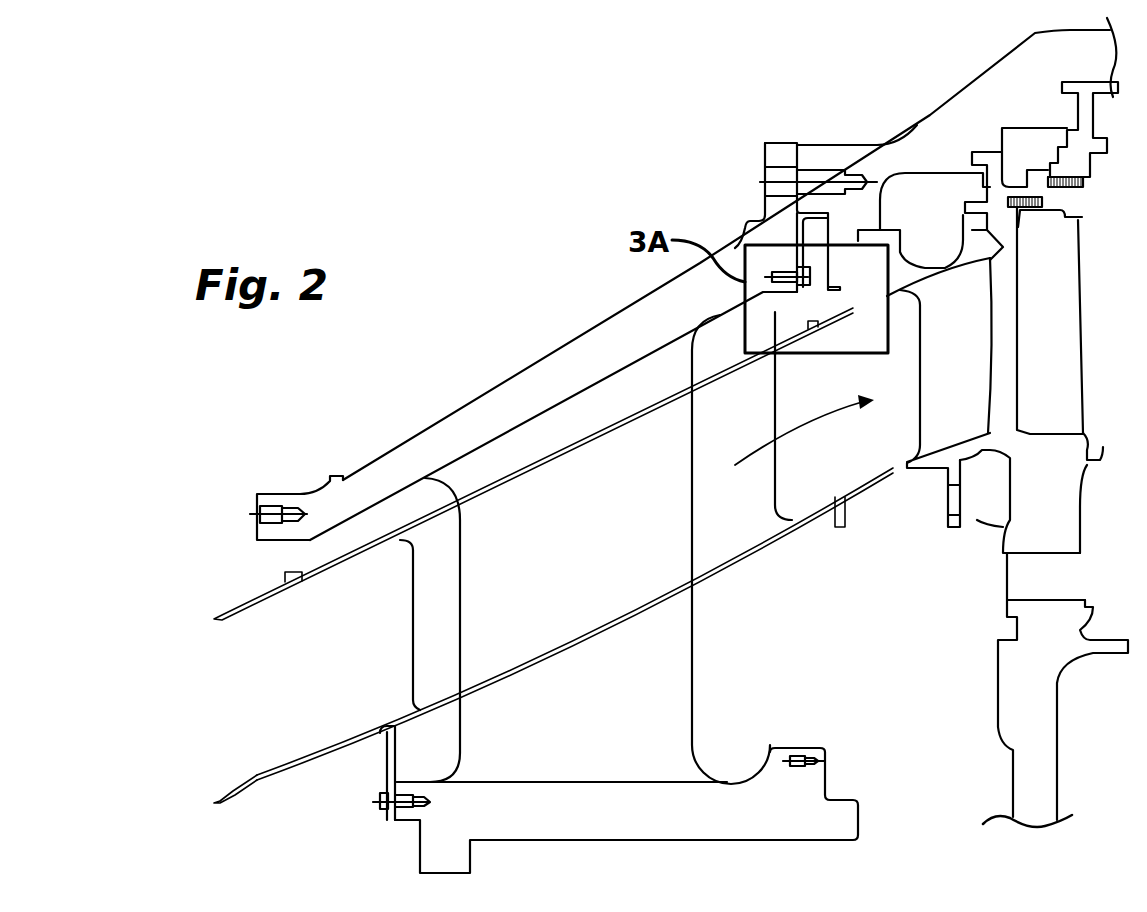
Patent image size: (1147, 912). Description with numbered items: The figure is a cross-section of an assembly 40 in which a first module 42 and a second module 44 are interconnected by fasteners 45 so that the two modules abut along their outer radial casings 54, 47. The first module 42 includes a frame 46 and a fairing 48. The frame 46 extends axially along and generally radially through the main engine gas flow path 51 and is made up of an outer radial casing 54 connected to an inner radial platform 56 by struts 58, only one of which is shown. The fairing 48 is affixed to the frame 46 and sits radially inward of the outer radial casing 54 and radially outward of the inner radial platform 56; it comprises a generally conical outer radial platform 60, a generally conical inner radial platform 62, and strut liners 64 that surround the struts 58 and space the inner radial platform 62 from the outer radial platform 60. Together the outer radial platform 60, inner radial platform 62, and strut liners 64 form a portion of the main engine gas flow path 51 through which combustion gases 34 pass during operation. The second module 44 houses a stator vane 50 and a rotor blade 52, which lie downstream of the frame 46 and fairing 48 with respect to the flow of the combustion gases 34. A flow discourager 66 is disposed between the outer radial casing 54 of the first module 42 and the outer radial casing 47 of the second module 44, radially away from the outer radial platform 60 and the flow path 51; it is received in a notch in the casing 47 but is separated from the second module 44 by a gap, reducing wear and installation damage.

The assembly 40 is at (713, 279).
The first module 42 is at (482, 300).
The second module 44 is at (877, 160).
The fasteners 45 is at (758, 174).
The frame 46 is at (428, 390).
The outer radial casing 47 is at (947, 155).
The fairing 48 is at (350, 760).
The stator vane 50 is at (969, 367).
The main engine gas flow path 51 is at (859, 459).
The rotor blade 52 is at (1061, 339).
The outer radial casing 54 is at (337, 487).
The inner radial platform 56 is at (432, 845).
The struts 58 is at (586, 730).
The outer radial platform 60 is at (282, 600).
The inner radial platform 62 is at (300, 750).
The strut liners 64 is at (413, 635).
The flow discourager 66 is at (788, 312).
The combustion gases 34 is at (817, 420).